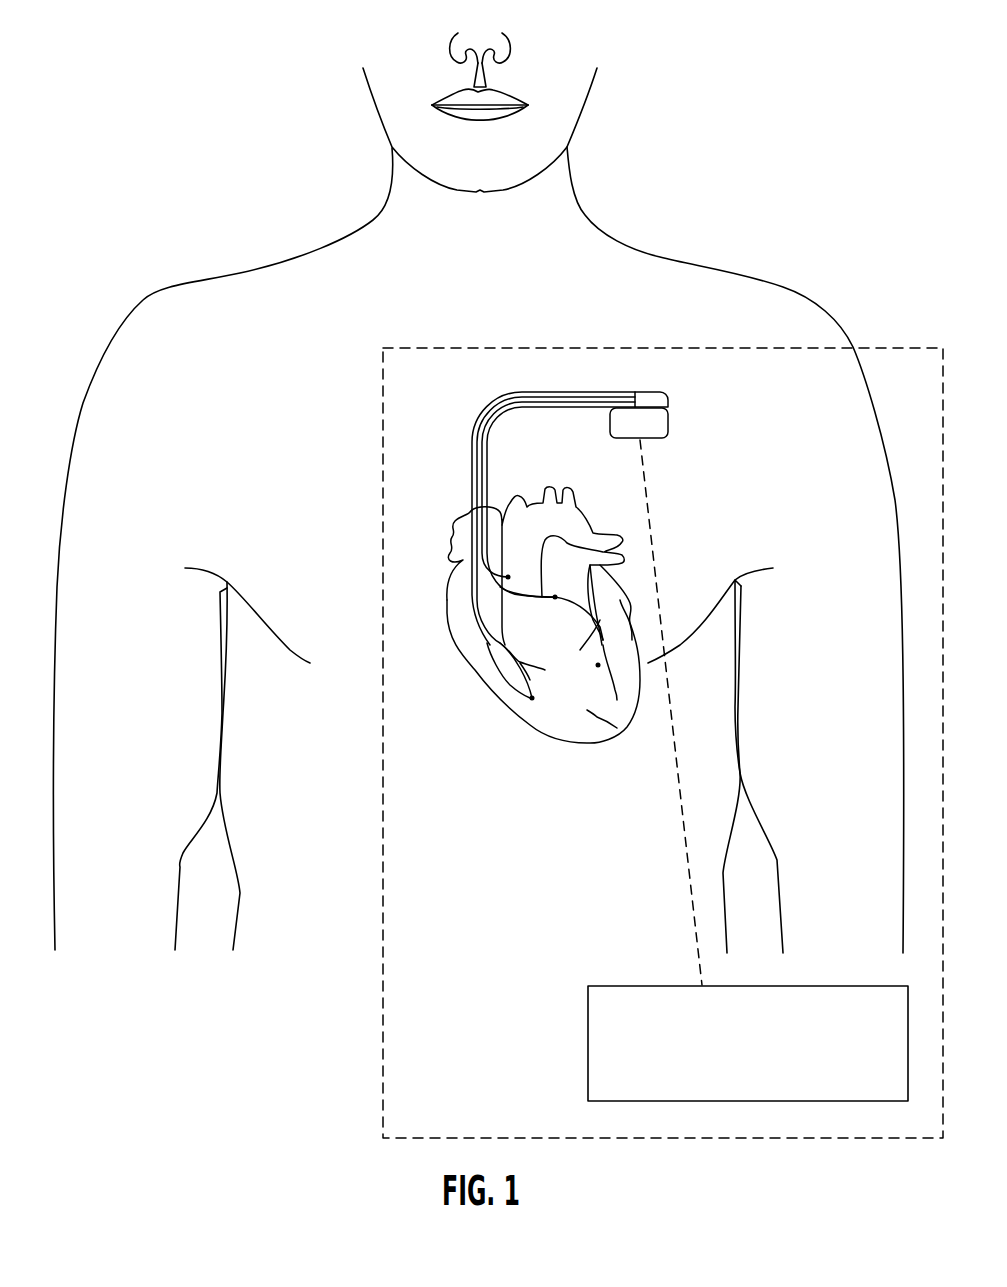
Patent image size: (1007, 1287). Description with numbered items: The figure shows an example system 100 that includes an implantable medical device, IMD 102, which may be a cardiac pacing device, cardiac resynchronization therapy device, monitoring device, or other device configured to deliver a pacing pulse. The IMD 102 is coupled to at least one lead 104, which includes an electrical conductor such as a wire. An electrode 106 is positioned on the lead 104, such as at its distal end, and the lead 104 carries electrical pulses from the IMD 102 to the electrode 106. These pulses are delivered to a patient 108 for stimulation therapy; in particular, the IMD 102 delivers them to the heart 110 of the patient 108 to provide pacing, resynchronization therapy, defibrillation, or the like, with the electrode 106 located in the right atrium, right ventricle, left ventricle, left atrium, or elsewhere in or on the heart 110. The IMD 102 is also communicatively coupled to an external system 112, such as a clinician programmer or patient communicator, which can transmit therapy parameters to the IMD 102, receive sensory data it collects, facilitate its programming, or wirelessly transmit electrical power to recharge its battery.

The system 100 is at (882, 347).
The IMD 102 is at (667, 393).
The lead 104 is at (490, 410).
The electrode 106 is at (530, 700).
The patient 108 is at (145, 300).
The heart 110 is at (553, 737).
The external system 112 is at (845, 985).